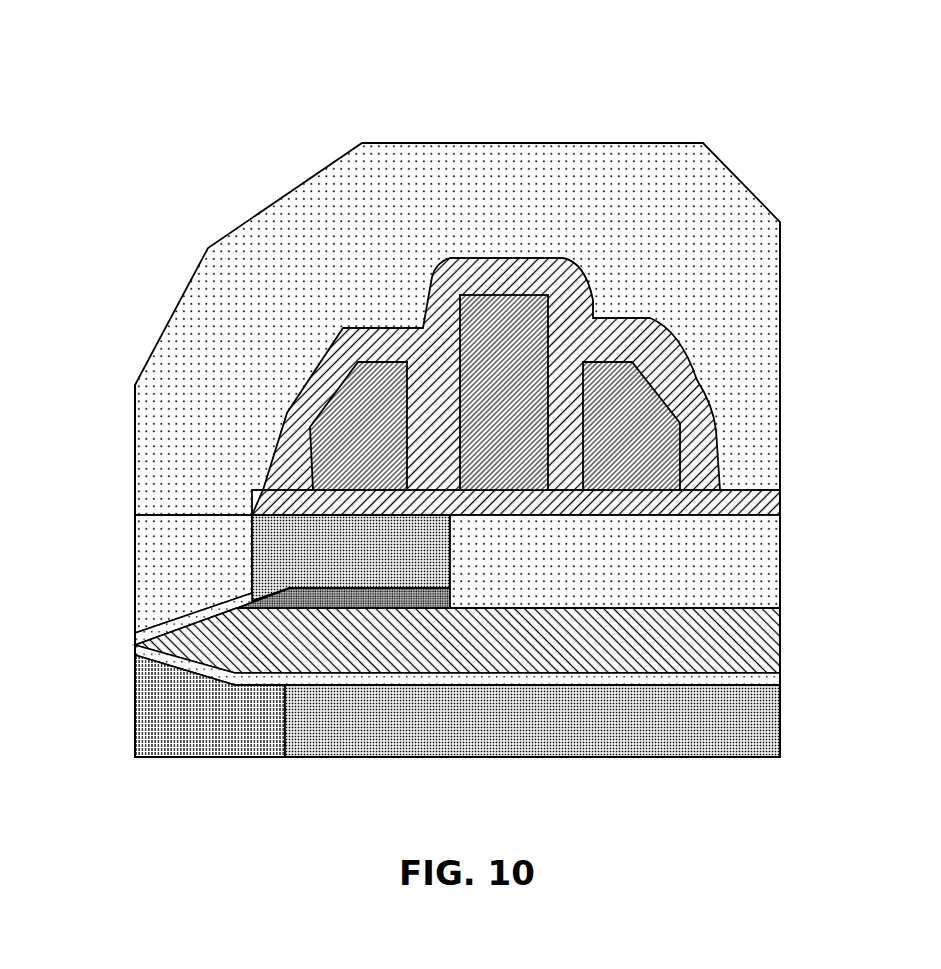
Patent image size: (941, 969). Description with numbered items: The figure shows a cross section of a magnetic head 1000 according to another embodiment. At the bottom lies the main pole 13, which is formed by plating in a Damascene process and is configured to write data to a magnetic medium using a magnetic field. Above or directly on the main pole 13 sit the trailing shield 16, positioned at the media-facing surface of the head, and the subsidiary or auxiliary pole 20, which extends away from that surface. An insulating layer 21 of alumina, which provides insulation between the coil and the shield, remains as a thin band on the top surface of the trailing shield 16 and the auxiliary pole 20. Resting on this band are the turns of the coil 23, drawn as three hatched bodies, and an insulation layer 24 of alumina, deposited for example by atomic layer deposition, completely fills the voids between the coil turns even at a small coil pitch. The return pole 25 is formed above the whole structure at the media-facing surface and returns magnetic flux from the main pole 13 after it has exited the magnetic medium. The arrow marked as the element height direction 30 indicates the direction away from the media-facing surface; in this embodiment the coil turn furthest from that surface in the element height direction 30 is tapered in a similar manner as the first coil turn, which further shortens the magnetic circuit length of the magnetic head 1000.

The magnetic head 1000 is at (266, 116).
The return pole 25 is at (491, 207).
The insulation layer 24 is at (697, 452).
The coil 23 is at (377, 461).
The insulating layer 21 is at (767, 505).
The trailing shield 16 is at (181, 574).
The auxiliary pole 20 is at (603, 574).
The main pole 13 is at (487, 652).
The element height direction 30 is at (742, 785).